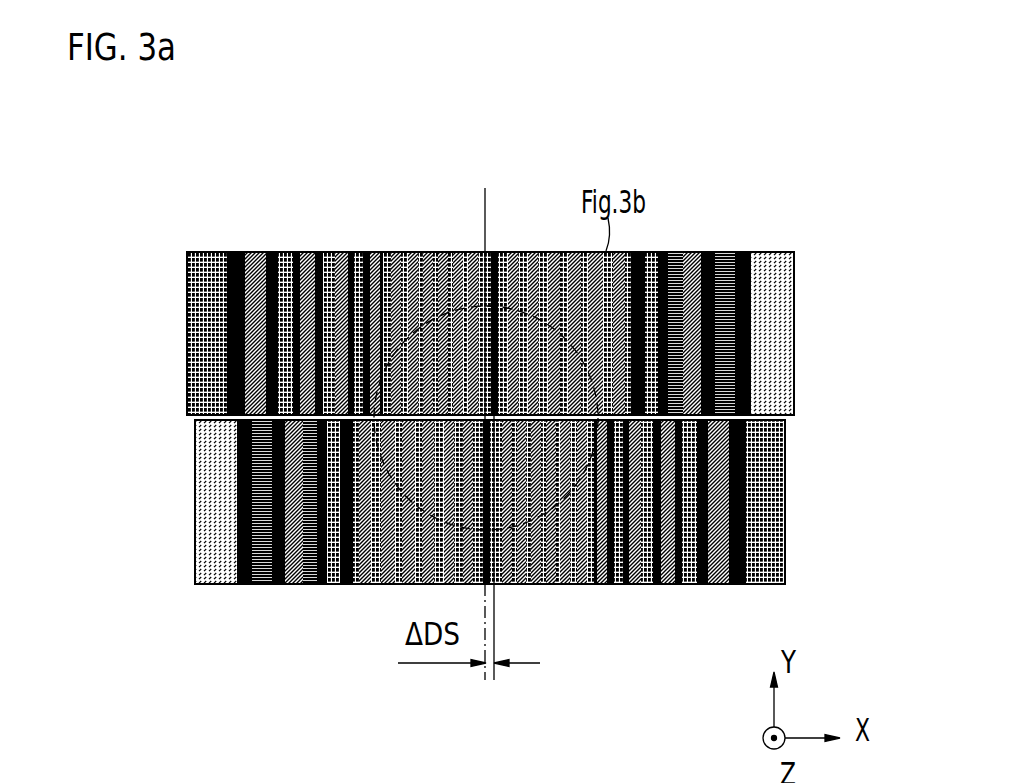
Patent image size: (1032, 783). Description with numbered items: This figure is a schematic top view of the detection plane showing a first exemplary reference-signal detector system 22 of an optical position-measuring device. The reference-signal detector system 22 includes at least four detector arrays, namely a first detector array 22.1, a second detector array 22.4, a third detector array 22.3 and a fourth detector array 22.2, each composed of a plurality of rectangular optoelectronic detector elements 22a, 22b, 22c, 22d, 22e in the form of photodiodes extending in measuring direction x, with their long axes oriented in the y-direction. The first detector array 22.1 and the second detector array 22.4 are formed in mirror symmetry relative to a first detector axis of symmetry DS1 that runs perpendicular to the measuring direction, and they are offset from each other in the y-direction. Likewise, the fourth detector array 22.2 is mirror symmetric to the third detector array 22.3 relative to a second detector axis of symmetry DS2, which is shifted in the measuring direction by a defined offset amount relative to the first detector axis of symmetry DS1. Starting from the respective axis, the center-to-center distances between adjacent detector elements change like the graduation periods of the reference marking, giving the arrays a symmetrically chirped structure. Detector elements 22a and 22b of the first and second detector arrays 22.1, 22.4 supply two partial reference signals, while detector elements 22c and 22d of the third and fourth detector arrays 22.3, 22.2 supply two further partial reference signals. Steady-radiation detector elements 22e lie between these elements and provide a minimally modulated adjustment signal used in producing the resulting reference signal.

The reference-signal detector system 22 is at (150, 409).
The first detector array 22.1 is at (158, 312).
The fourth detector array 22.2 is at (802, 307).
The third detector array 22.3 is at (167, 498).
The second detector array 22.4 is at (792, 481).
The detector element 22a is at (770, 538).
The detector element 22b is at (703, 570).
The detector element 22c is at (766, 374).
The detector element 22d is at (708, 243).
The steady-radiation detector element 22e is at (238, 572).
The first detector axis of symmetry DS1 is at (477, 208).
The second detector axis of symmetry DS2 is at (486, 591).